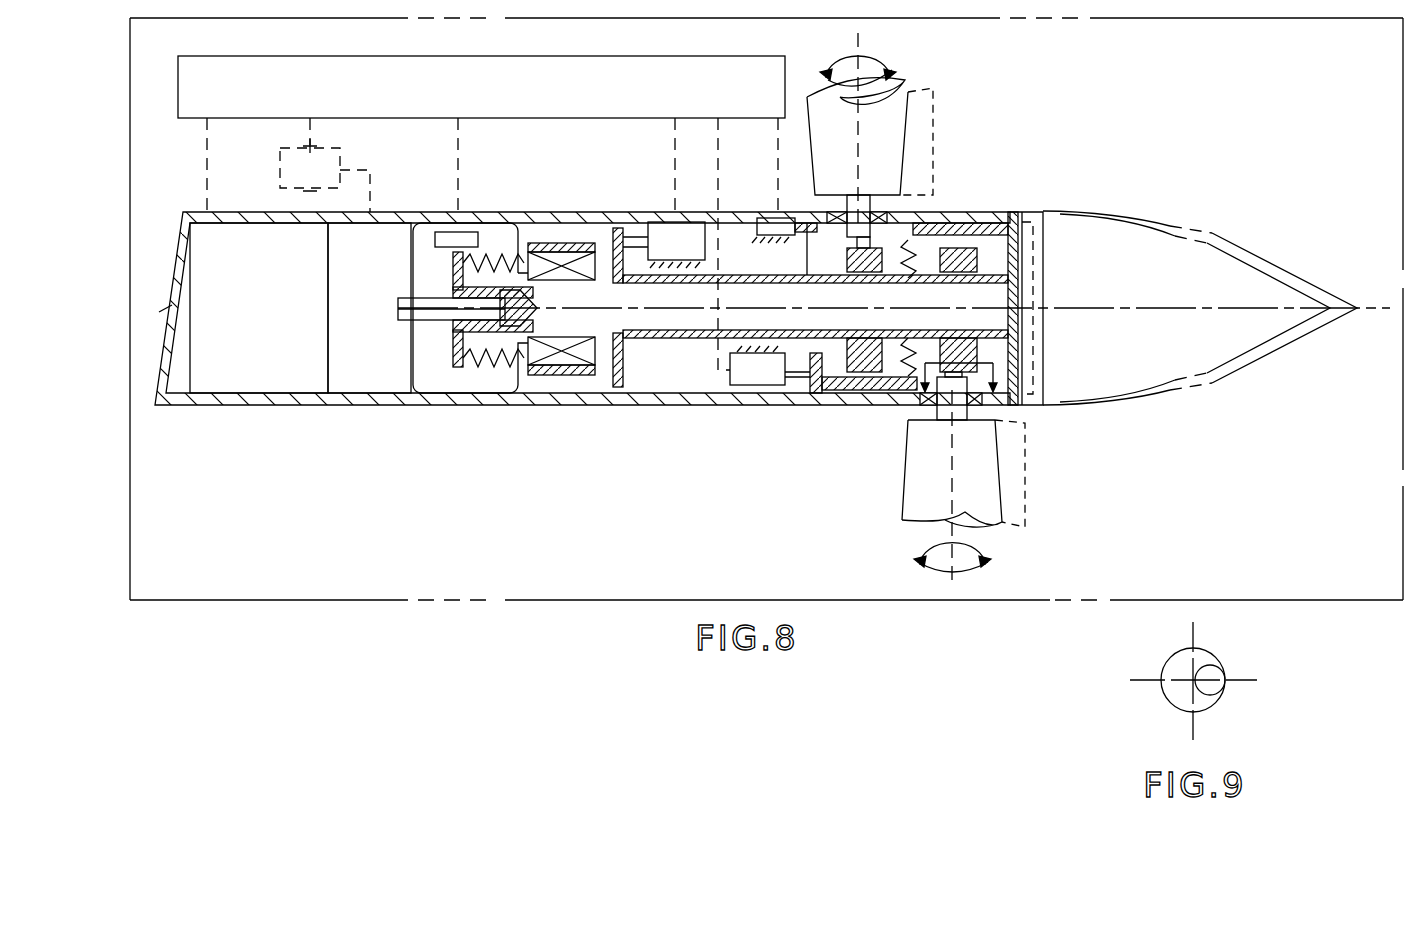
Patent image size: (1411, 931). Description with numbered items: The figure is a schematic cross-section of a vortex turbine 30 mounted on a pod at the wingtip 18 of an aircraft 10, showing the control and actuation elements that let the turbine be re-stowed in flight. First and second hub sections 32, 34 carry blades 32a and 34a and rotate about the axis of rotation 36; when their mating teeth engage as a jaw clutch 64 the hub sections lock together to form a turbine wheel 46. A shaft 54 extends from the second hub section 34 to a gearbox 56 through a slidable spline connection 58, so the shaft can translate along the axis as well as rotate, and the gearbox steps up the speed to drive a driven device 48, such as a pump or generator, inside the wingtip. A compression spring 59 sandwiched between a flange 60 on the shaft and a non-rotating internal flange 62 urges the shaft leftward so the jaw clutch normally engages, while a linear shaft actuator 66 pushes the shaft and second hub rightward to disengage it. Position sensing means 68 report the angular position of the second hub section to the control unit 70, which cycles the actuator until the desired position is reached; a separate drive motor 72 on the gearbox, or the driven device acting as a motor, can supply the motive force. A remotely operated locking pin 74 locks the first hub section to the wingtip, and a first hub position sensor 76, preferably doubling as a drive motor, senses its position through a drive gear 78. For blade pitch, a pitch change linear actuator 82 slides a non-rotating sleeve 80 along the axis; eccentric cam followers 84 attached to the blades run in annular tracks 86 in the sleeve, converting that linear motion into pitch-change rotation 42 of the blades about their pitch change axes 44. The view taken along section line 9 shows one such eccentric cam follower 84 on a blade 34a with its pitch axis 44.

In FIG. 8, the underwater vehicle 10 is at (1345, 599).
In FIG. 8, the wingtip 18 is at (590, 406).
In FIG. 8, the vortex turbine 30 is at (955, 138).
In FIG. 8, the first hub section 32 is at (812, 395).
In FIG. 8, the blade 32a is at (838, 157).
In FIG. 8, the second hub section 34 is at (1018, 243).
In FIG. 8, the blade 34a is at (930, 492).
In FIG. 9, the blade 34a is at (1175, 657).
In FIG. 8, the axis of rotation 36 is at (1362, 306).
In FIG. 8, the pitch-change rotation 42 is at (826, 79).
In FIG. 8, the pitch change axis 44 is at (860, 38).
In FIG. 9, the pitch change axis 44 is at (1192, 722).
In FIG. 8, the turbine wheel 46 is at (955, 89).
In FIG. 8, the driven device 48 is at (243, 306).
In FIG. 8, the shaft 54 is at (667, 325).
In FIG. 8, the gearbox 56 is at (351, 286).
In FIG. 8, the slidable connection 58 is at (443, 362).
In FIG. 8, the compression spring 59 is at (470, 368).
In FIG. 8, the flange 60 is at (473, 266).
In FIG. 8, the non-rotating internal flange 62 is at (500, 393).
In FIG. 8, the jaw clutch 64 is at (895, 404).
In FIG. 8, the linear shaft actuator means 66 is at (530, 250).
In FIG. 8, the second hub section position sensing means 68 is at (455, 232).
In FIG. 8, the vortex turbine control unit 70 is at (467, 105).
In FIG. 8, the drive motor 72 is at (296, 181).
In FIG. 8, the locking pin 74 is at (777, 218).
In FIG. 8, the first hub section position sensor 76 is at (745, 406).
In FIG. 8, the drive gear 78 is at (745, 410).
In FIG. 8, the non-rotating sleeve 80 is at (615, 230).
In FIG. 8, the pitch change linear actuator 82 is at (662, 256).
In FIG. 8, the eccentric cam follower 84 is at (930, 215).
In FIG. 9, the eccentric cam follower 84 is at (1212, 665).
In FIG. 8, the annular track 86 is at (1000, 222).
In FIG. 8, the section line 9— 9 is at (961, 366).